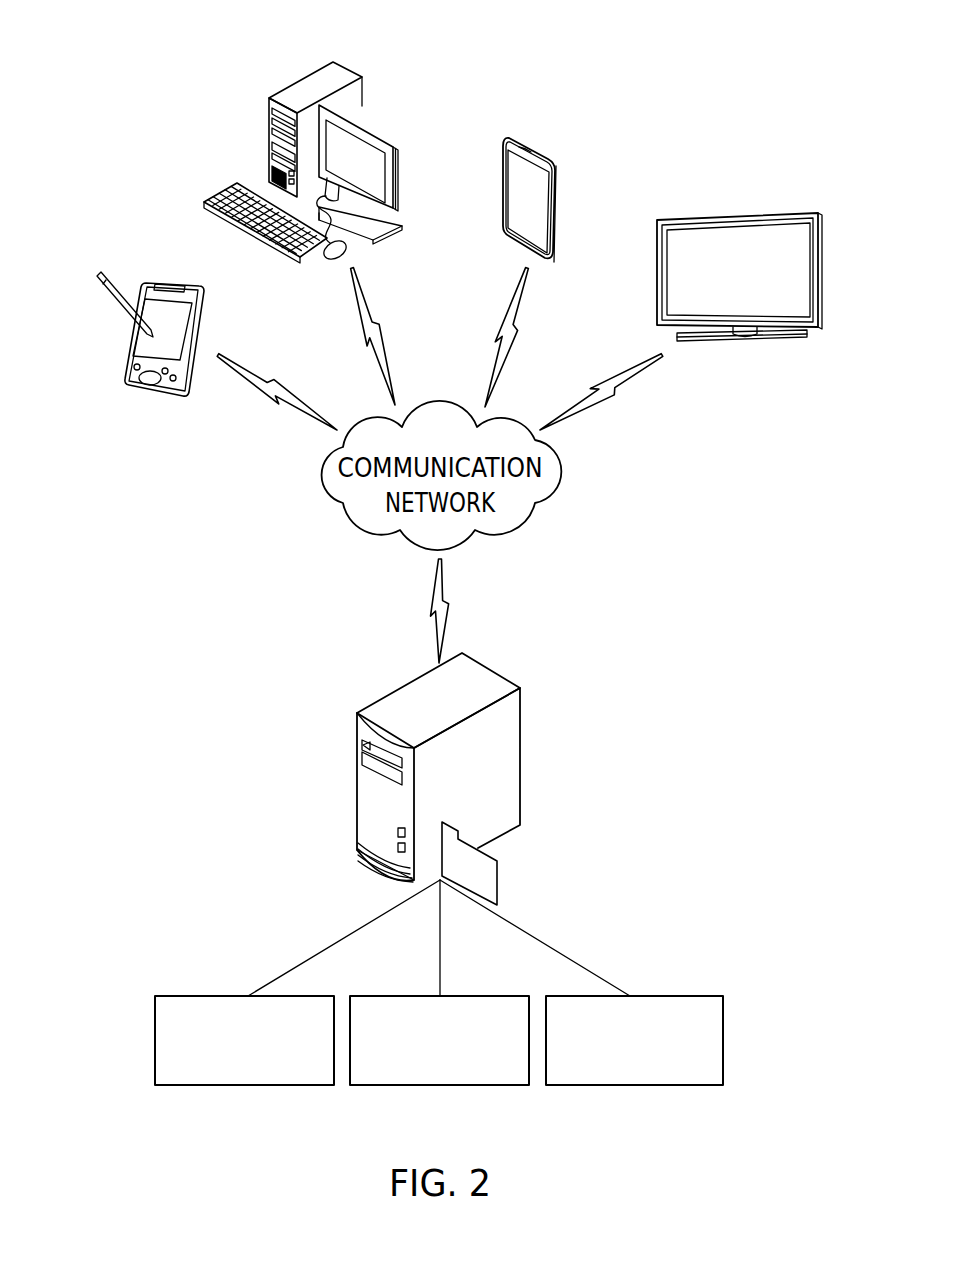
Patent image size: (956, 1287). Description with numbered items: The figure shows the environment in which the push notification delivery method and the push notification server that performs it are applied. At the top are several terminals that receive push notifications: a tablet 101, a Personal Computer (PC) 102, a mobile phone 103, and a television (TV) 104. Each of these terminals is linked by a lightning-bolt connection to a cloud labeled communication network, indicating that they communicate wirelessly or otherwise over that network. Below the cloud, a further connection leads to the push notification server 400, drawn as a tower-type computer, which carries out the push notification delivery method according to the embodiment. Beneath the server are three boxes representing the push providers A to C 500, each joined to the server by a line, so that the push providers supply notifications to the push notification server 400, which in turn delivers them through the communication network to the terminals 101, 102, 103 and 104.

The tablet 101 is at (163, 282).
The Personal Computer (PC) 102 is at (305, 84).
The mobile phone 103 is at (527, 138).
The television (TV) 104 is at (723, 227).
The push notification server 400 is at (363, 802).
The push providers A to C 500 is at (155, 1037).